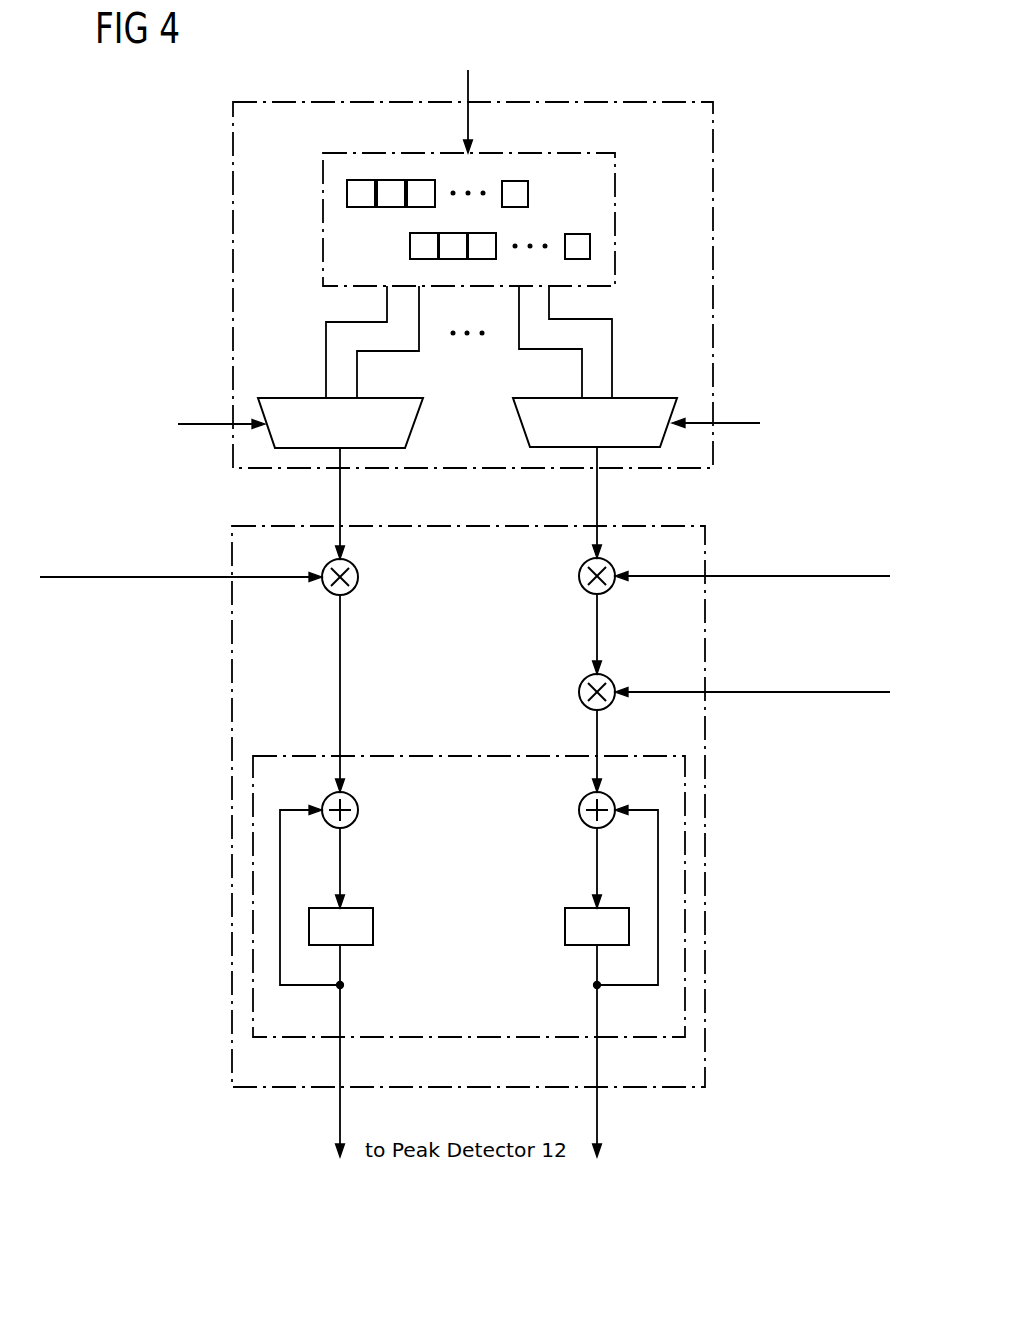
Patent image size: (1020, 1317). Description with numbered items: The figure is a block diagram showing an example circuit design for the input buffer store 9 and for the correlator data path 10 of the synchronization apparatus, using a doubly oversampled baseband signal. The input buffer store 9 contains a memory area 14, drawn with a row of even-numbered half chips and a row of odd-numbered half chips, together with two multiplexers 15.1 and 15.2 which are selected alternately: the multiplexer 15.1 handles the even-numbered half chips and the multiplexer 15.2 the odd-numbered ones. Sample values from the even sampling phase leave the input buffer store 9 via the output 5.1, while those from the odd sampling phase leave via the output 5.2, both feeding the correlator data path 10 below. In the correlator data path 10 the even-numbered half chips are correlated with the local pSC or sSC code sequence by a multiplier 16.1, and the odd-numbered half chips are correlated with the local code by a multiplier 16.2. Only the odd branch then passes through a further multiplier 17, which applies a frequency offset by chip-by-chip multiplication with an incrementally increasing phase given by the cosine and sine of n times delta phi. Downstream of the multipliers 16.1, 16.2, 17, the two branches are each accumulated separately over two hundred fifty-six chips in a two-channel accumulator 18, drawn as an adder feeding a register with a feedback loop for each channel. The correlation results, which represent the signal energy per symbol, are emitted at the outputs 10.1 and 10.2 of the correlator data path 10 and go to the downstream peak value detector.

The input buffer store 9 is at (713, 177).
The memory area 14 is at (615, 235).
The multiplexer (even) 15.1 is at (283, 398).
The multiplexer (odd) 15.2 is at (655, 398).
The output for even sampling phase 5.1 is at (340, 493).
The output for odd sampling phase 5.2 is at (597, 493).
The correlator data path 10 is at (706, 950).
The multiplier for even half chips 16.1 is at (358, 577).
The multiplier for odd half chips 16.2 is at (579, 577).
The frequency-shift multiplier 17 is at (579, 692).
The two-channel accumulator 18 is at (685, 827).
The output of correlator data path (even) 10.1 is at (340, 1120).
The output of correlator data path (odd) 10.2 is at (597, 1120).